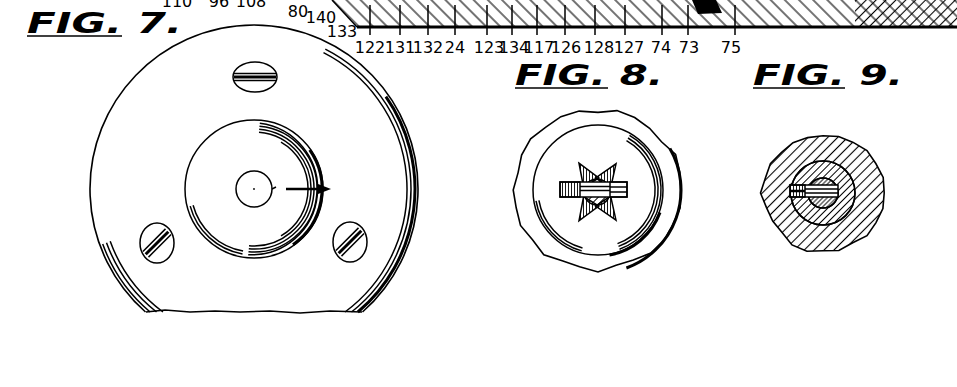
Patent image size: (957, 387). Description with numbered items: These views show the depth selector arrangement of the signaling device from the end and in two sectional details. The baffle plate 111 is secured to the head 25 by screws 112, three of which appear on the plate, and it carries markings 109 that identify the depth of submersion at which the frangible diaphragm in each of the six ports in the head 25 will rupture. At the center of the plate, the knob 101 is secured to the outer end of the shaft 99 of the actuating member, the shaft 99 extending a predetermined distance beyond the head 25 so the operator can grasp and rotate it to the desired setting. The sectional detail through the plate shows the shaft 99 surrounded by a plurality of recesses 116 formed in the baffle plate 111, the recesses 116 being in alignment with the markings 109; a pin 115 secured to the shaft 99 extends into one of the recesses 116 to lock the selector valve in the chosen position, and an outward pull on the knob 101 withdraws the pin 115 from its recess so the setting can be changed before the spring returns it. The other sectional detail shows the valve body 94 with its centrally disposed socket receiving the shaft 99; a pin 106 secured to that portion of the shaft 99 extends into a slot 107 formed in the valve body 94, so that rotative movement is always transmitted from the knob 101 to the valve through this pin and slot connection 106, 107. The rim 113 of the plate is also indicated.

In FIG. 9, the head 25 is at (852, 223).
In FIG. 9, the body 94 is at (847, 192).
In FIG. 7, the shaft 99 is at (243, 184).
In FIG. 8, the shaft 99 is at (595, 205).
In FIG. 9, the shaft 99 is at (821, 181).
In FIG. 7, the knob 101 is at (254, 177).
In FIG. 9, the pin 106 is at (788, 202).
In FIG. 9, the slot 107 is at (800, 174).
In FIG. 7, the marking 109 is at (203, 109).
In FIG. 7, the baffle plate 111 is at (408, 119).
In FIG. 8, the baffle plate 111 is at (550, 120).
In FIG. 7, the screws 112 is at (253, 66).
In FIG. 7, the rim 113 is at (397, 165).
In FIG. 8, the pin 115 is at (621, 179).
In FIG. 8, the recesses 116 is at (604, 163).